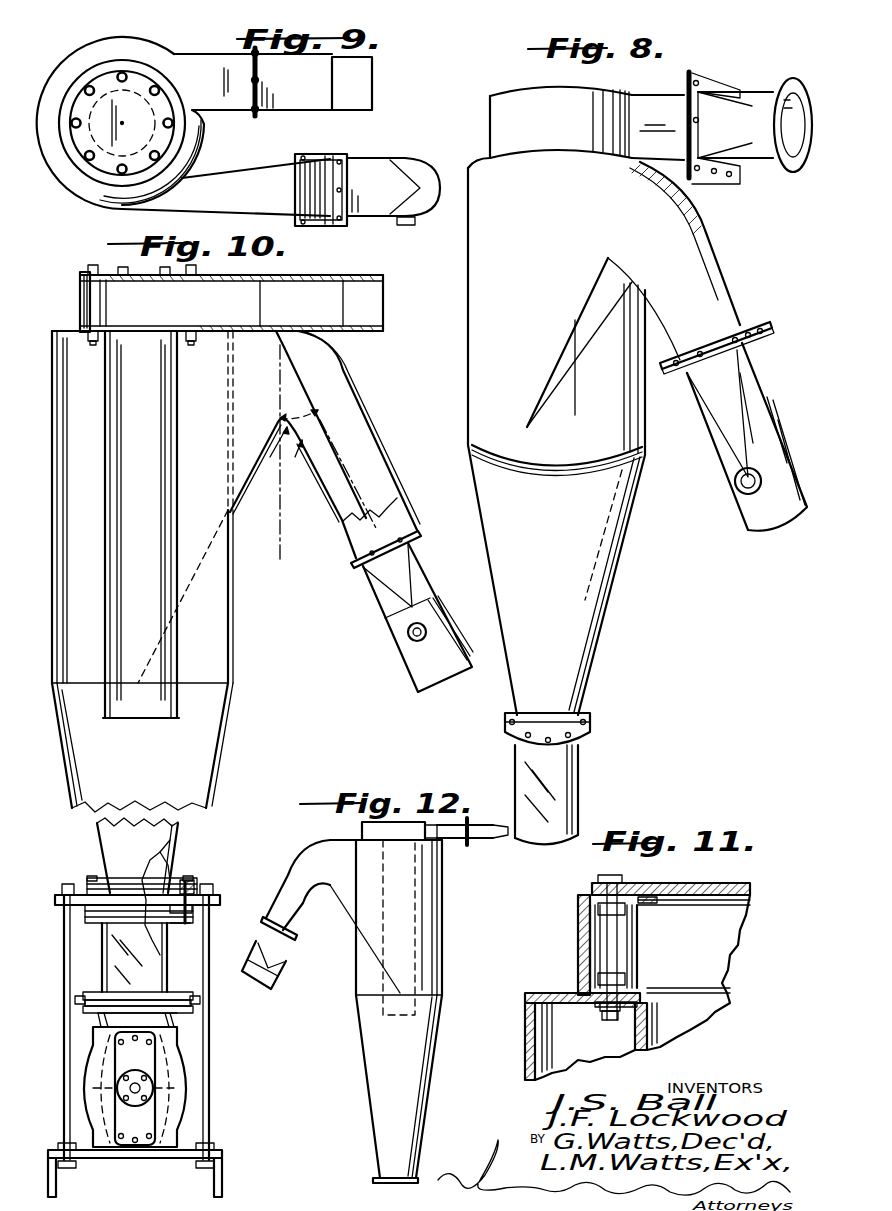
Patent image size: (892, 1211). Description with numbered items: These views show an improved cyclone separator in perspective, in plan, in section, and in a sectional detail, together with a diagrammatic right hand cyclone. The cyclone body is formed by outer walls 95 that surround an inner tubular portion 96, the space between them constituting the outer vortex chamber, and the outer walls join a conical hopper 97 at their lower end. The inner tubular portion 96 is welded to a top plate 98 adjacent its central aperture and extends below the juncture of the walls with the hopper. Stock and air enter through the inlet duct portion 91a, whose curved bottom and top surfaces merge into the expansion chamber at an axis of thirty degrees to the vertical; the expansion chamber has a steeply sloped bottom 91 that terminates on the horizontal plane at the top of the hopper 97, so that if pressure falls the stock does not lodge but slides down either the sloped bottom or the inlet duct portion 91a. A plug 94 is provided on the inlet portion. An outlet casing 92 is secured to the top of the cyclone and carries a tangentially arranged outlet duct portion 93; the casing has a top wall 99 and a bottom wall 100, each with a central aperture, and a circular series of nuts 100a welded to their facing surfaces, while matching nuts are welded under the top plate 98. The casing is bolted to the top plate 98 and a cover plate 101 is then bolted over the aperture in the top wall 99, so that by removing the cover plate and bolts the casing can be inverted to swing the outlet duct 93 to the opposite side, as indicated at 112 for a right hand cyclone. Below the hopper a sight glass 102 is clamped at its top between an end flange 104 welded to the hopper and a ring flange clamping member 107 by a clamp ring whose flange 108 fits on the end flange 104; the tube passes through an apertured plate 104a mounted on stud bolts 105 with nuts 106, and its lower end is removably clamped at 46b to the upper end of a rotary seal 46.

In FIG. 10, the rotary seal 46 is at (188, 1092).
In FIG. 10, the sight tube clamp connection 46b is at (210, 1027).
In FIG. 9, the steeply sloped bottom 91 is at (214, 185).
In FIG. 10, the steeply sloped bottom 91 is at (263, 457).
In FIG. 8, the steeply sloped bottom 91 is at (568, 360).
In FIG. 10, the inlet duct portion 91a is at (332, 498).
In FIG. 9, the outlet casing 92 is at (82, 74).
In FIG. 10, the outlet casing 92 is at (80, 300).
In FIG. 8, the outlet casing 92 is at (502, 104).
In FIG. 11, the outlet casing 92 is at (578, 948).
In FIG. 9, the outlet duct portion 93 is at (296, 100).
In FIG. 10, the outlet duct portion 93 is at (293, 284).
In FIG. 8, the outlet duct portion 93 is at (654, 100).
In FIG. 8, the plug 94 is at (740, 487).
In FIG. 10, the outer walls 95 is at (234, 638).
In FIG. 10, the inner tubular portion 96 is at (105, 496).
In FIG. 10, the conical hopper 97 is at (221, 758).
In FIG. 10, the top plate 98 is at (64, 340).
In FIG. 10, the top wall of outlet casing 99 is at (118, 293).
In FIG. 11, the top wall of outlet casing 99 is at (640, 905).
In FIG. 10, the bottom wall of outlet casing 100 is at (188, 322).
In FIG. 11, the bottom wall of outlet casing 100 is at (637, 985).
In FIG. 11, the nuts 100a is at (625, 972).
In FIG. 9, the cover plate 101 is at (82, 138).
In FIG. 10, the cover plate 101 is at (107, 264).
In FIG. 11, the cover plate 101 is at (698, 883).
In FIG. 10, the sight glass 102 is at (168, 985).
In FIG. 8, the sight glass 102 is at (582, 773).
In FIG. 10, the end flange 104 is at (186, 882).
In FIG. 10, the apertured plate 104a is at (221, 894).
In FIG. 10, the stud bolts 105 is at (213, 1003).
In FIG. 10, the nuts 106 is at (215, 895).
In FIG. 10, the ring flange clamping member 107 is at (173, 925).
In FIG. 10, the clamp ring flange 108 is at (188, 882).
In FIG. 12, the opposite-side outlet 112 is at (452, 843).